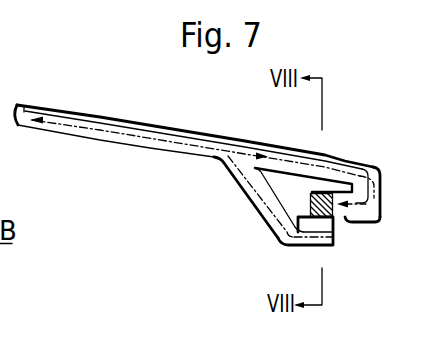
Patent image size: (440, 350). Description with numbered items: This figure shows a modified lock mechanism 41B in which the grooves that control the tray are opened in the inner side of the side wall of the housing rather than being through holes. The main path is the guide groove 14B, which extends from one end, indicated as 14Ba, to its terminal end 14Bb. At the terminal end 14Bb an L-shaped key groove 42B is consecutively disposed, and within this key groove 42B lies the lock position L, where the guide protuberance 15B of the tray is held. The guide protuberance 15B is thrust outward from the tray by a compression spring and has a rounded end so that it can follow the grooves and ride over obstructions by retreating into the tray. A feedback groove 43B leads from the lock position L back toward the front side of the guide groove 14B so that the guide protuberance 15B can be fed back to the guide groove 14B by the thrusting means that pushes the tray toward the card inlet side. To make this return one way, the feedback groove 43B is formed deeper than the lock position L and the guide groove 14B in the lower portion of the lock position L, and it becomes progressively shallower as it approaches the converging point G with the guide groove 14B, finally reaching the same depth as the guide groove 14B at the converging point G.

The guide groove 14B is at (185, 134).
The one end of bar 14Ba is at (25, 105).
The terminal end of the guide groove 14Bb is at (371, 168).
The guide protuberance 15B is at (336, 215).
The lock mechanism 41B is at (255, 249).
The key groove 42B is at (371, 208).
The feedback groove 43B is at (256, 199).
The converging point G is at (229, 153).
The lock position L is at (323, 191).